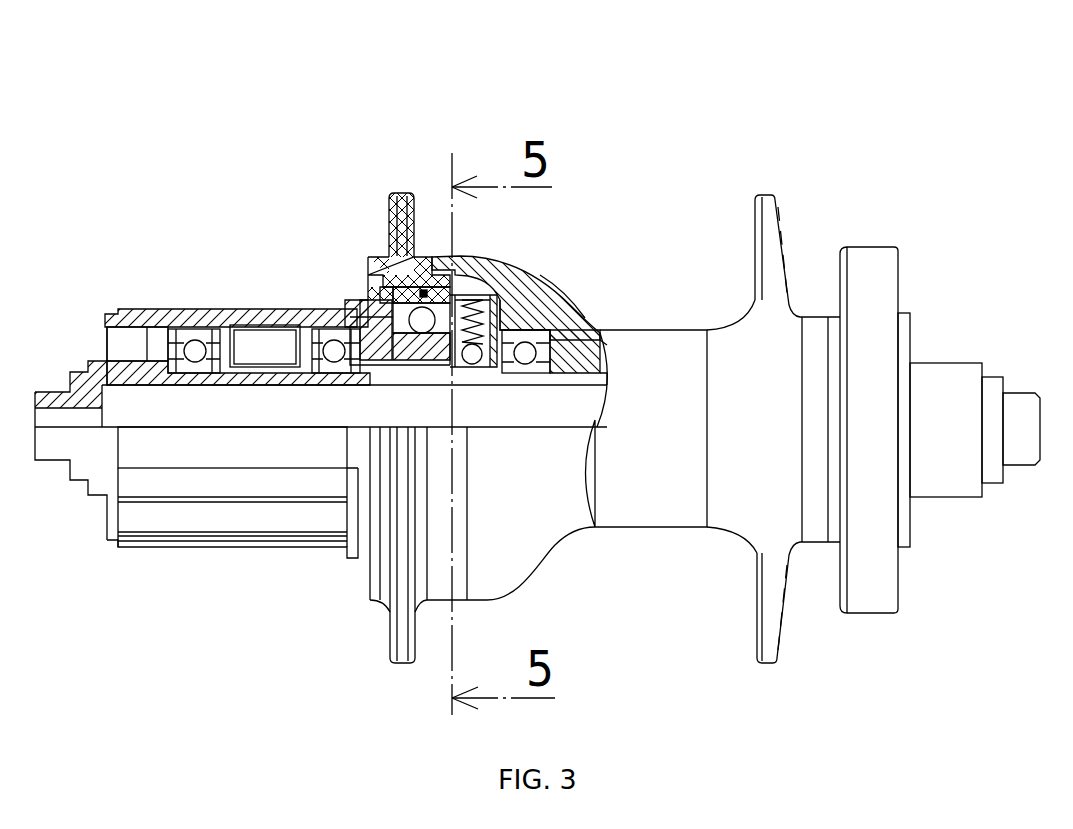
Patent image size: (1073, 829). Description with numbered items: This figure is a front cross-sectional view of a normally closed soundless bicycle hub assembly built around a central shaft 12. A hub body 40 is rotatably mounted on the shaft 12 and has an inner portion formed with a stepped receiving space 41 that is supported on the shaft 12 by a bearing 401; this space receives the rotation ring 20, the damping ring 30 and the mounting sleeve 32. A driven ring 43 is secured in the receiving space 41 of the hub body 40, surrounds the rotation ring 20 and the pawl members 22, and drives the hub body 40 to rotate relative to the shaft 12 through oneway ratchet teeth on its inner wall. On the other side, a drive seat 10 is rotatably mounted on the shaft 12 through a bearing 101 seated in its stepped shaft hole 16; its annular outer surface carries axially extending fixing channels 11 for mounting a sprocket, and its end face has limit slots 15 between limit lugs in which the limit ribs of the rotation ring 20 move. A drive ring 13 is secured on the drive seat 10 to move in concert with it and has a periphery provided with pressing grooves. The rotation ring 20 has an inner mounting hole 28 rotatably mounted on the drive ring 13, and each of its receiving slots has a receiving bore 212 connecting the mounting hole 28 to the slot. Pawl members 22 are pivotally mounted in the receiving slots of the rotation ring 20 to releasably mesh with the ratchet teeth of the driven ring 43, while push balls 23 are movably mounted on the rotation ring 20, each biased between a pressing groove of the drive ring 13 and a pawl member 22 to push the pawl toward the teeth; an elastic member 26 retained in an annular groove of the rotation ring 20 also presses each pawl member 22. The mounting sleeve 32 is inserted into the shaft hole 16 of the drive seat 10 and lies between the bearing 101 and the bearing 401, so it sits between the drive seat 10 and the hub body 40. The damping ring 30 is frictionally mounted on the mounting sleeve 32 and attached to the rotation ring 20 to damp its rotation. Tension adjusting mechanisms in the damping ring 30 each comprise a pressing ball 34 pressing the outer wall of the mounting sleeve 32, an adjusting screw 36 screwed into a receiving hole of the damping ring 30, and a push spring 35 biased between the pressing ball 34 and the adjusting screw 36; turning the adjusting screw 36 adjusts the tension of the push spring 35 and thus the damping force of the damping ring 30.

The drive seat 10 is at (200, 558).
The bearing 101 is at (300, 308).
The fixing channels 11 is at (235, 518).
The shaft 12 is at (605, 357).
The drive ring 13 is at (340, 305).
The limit slots 15 is at (340, 318).
The stepped shaft hole 16 is at (360, 408).
The rotation ring 20 is at (350, 305).
The receiving bore 212 is at (370, 300).
The pawl members 22 is at (385, 262).
The push balls 23 is at (430, 258).
The elastic member 26 is at (390, 262).
The mounting hole 28 is at (365, 425).
The damping ring 30 is at (525, 268).
The mounting sleeve 32 is at (538, 318).
The pressing ball 34 is at (480, 350).
The push spring 35 is at (535, 300).
The adjusting screw 36 is at (507, 292).
The hub body 40 is at (645, 533).
The bearing 401 is at (550, 330).
The stepped receiving space 41 is at (472, 293).
The driven ring 43 is at (398, 205).